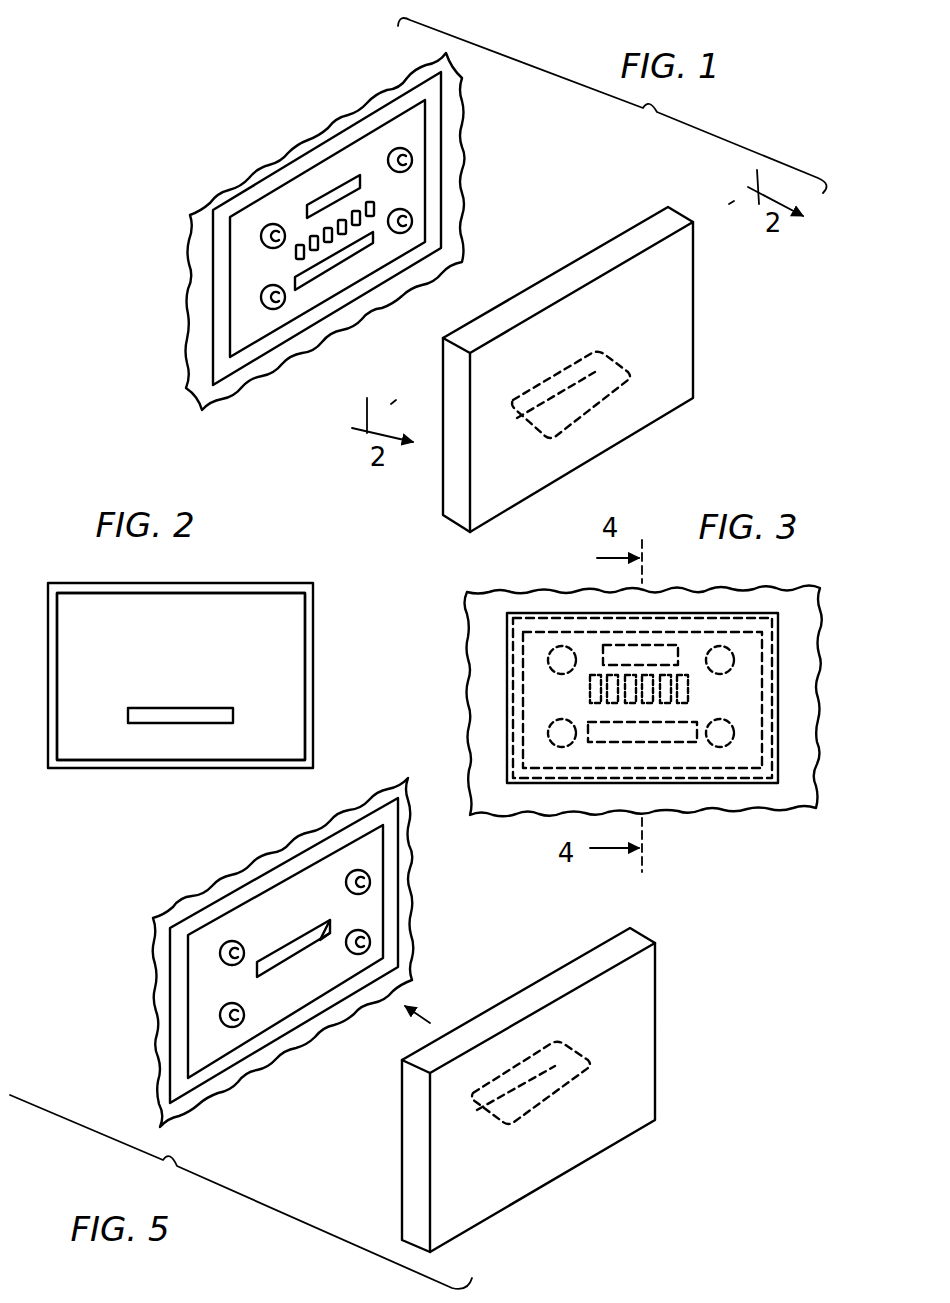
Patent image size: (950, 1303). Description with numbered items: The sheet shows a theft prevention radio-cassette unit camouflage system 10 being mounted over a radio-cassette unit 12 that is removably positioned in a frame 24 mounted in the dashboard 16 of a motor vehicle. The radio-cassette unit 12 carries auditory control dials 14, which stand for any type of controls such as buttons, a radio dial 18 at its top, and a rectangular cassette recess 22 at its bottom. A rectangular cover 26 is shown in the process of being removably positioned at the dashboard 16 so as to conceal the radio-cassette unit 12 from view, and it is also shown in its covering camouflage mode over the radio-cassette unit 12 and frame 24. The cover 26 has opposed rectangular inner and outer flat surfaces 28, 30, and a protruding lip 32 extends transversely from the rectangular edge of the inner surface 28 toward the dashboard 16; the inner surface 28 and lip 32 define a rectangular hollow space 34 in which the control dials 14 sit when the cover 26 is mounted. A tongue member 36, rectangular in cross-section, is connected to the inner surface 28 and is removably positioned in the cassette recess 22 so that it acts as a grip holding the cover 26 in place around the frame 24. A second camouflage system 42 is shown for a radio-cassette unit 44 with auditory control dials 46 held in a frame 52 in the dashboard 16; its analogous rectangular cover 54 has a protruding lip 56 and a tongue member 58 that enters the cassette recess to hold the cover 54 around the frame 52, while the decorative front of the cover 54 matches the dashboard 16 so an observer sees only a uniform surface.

In FIG. 1, the radio-cassette unit camouflage system 10 is at (728, 298).
In FIG. 1, the radio-cassette unit 12 is at (407, 128).
In FIG. 1, the auditory control dials 14 is at (409, 219).
In FIG. 3, the auditory control dials 14 is at (548, 664).
In FIG. 1, the dashboard 16 is at (207, 243).
In FIG. 3, the dashboard 16 is at (793, 612).
In FIG. 5, the dashboard 16 is at (200, 900).
In FIG. 1, the radio dial 18 is at (337, 197).
In FIG. 3, the radio dial 18 is at (623, 655).
In FIG. 1, the cassette recess 22 is at (322, 267).
In FIG. 1, the frame 24 is at (435, 227).
In FIG. 3, the frame 24 is at (762, 697).
In FIG. 1, the cover 26 is at (580, 390).
In FIG. 2, the cover 26 is at (211, 683).
In FIG. 3, the cover 26 is at (784, 668).
In FIG. 2, the inner surface 28 is at (288, 622).
In FIG. 1, the outer surface 30 is at (673, 398).
In FIG. 1, the lip 32 is at (455, 517).
In FIG. 2, the lip 32 is at (278, 585).
In FIG. 3, the lip 32 is at (777, 770).
In FIG. 2, the hollow space 34 is at (98, 745).
In FIG. 1, the tongue member 36 is at (573, 413).
In FIG. 2, the tongue member 36 is at (162, 715).
In FIG. 3, the tongue member 36 is at (673, 727).
In FIG. 5, the camouflage system 42 is at (570, 1080).
In FIG. 5, the radio-cassette unit 44 is at (370, 908).
In FIG. 5, the auditory control dials 46 is at (368, 877).
In FIG. 5, the frame 52 is at (180, 1038).
In FIG. 5, the cover 54 is at (633, 1083).
In FIG. 5, the lip 56 is at (628, 945).
In FIG. 5, the tongue member 58 is at (508, 1088).